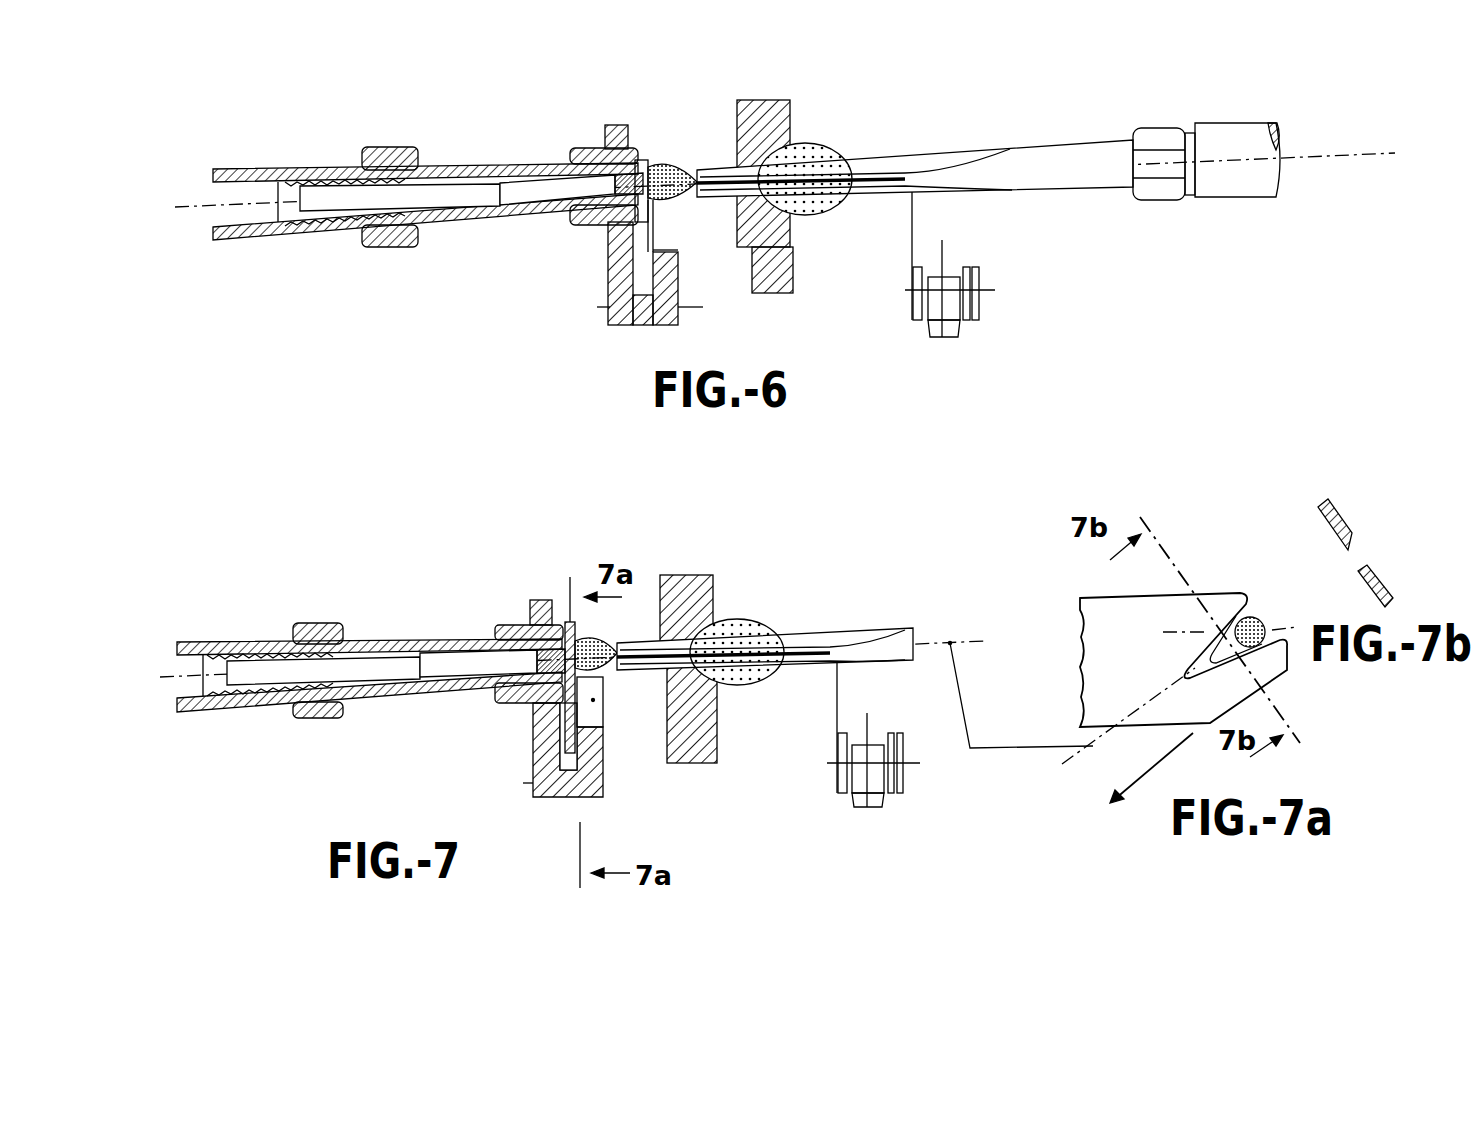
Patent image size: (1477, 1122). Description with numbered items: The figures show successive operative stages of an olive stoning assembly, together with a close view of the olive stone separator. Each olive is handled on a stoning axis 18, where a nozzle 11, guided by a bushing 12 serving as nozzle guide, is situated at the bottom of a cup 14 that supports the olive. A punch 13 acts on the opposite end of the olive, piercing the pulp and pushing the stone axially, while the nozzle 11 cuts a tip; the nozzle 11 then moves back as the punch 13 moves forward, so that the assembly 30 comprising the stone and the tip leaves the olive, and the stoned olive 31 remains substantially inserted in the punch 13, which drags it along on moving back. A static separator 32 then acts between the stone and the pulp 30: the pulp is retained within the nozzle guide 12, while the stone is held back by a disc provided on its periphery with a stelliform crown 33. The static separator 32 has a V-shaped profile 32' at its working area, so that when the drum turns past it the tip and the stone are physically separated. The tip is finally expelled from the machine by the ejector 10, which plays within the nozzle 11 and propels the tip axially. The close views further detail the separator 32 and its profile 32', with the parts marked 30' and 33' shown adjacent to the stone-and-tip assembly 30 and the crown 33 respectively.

In FIG. 6, the ejector 10 is at (337, 195).
In FIG. 7, the ejector 10 is at (395, 665).
In FIG. 6, the nozzle 11 is at (453, 172).
In FIG. 7, the nozzle 11 is at (452, 640).
In FIG. 6, the bushing 12 is at (588, 145).
In FIG. 6, the punch 13 is at (922, 157).
In FIG. 7, the punch 13 is at (862, 633).
In FIG. 6, the cup 14 is at (790, 143).
In FIG. 7, the stoning axis 18 is at (1019, 714).
In FIG. 6, the assembly comprising the stone and the tip 30 is at (672, 113).
In FIG. 7, the assembly comprising the stone and the tip 30 is at (634, 592).
In FIG. 7A, the assembly comprising the stone and the tip 30 is at (1265, 591).
In FIG. 6, the bead holder 30' is at (608, 249).
In FIG. 7, the bead holder 30' is at (487, 741).
In FIG. 6, the stoned olive 31 is at (827, 153).
In FIG. 7, the stoned olive 31 is at (737, 652).
In FIG. 7, the static separator 32 is at (555, 641).
In FIG. 7A, the static separator 32 is at (1137, 638).
In FIG. 7B, the static separator 32 is at (1374, 502).
In FIG. 7, the V-shaped profile 32' is at (617, 702).
In FIG. 7A, the V-shaped profile 32' is at (1229, 599).
In FIG. 7B, the V-shaped profile 32' is at (1412, 571).
In FIG. 7, the stelliform crown 33 is at (593, 767).
In FIG. 7, the channel 33' is at (615, 743).